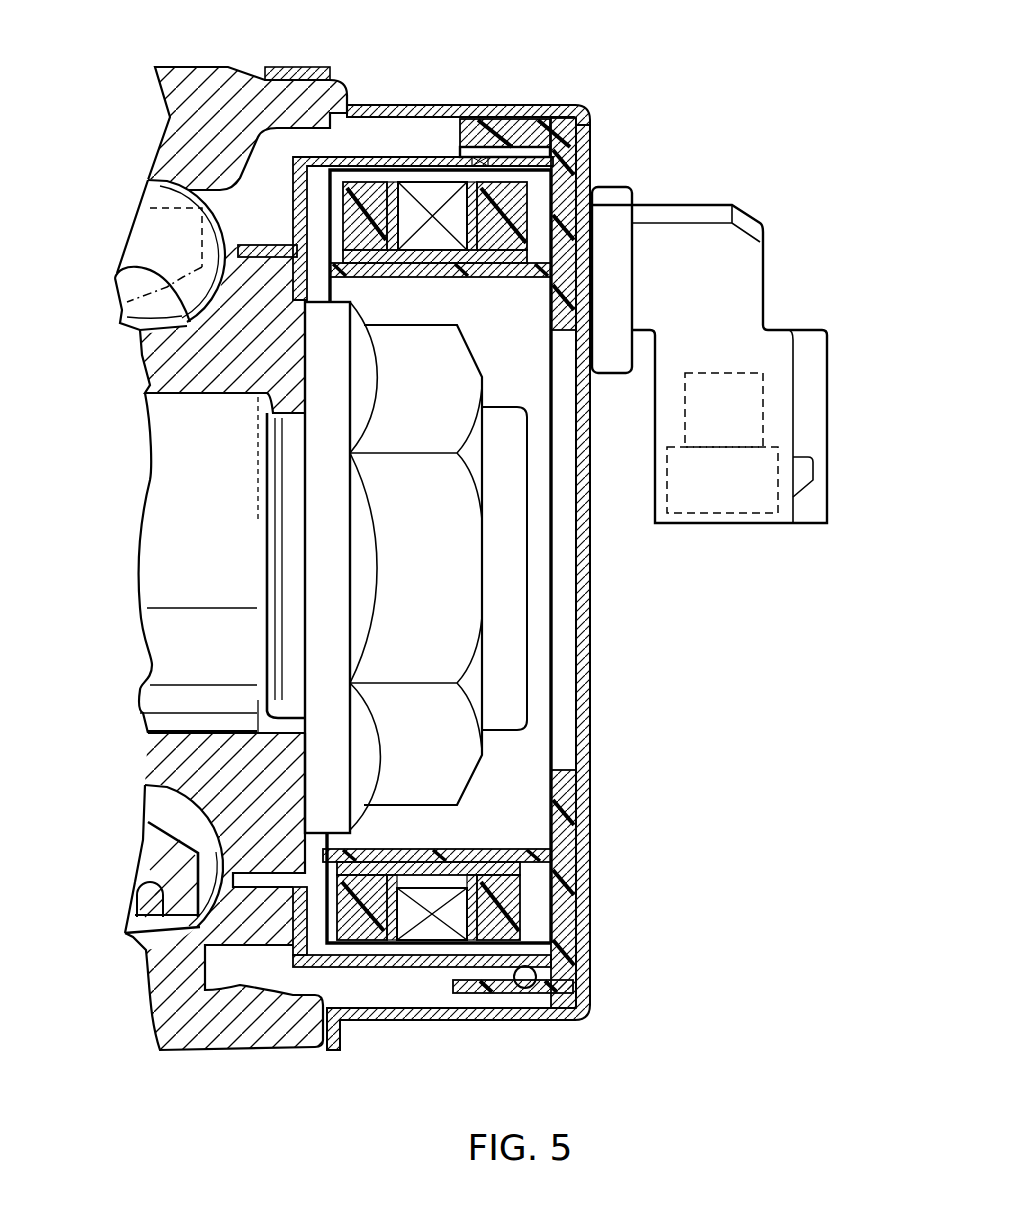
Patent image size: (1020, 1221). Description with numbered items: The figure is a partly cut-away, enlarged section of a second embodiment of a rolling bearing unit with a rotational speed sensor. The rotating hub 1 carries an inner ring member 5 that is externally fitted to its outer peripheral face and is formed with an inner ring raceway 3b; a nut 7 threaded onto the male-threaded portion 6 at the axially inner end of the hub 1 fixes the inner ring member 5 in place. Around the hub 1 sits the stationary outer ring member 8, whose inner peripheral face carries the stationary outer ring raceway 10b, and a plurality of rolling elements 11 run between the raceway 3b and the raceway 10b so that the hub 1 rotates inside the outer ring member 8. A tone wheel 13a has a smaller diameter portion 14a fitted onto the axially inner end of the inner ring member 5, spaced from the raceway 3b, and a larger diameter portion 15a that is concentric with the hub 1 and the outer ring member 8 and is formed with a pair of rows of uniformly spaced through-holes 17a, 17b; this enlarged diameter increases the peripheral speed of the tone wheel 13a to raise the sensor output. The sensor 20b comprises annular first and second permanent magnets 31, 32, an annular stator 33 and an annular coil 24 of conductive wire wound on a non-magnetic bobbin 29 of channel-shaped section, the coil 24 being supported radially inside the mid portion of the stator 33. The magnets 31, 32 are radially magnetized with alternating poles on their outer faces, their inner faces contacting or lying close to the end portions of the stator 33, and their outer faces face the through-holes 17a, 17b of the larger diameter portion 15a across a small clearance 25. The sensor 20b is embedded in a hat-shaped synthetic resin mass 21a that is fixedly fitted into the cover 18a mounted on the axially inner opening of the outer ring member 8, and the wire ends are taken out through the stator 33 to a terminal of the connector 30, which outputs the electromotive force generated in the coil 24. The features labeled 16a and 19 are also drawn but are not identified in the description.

The hub 1 is at (160, 420).
The inner ring raceway 3b is at (122, 276).
The inner ring member 5 is at (277, 283).
The male-threaded portion 6 is at (305, 633).
The nut 7 is at (457, 540).
The stationary outer ring member 8 is at (190, 80).
The stationary outer ring raceway 10b is at (140, 884).
The rolling elements 11 is at (160, 225).
The tone wheel 13a is at (445, 195).
The smaller diameter portion 14a is at (238, 963).
The larger diameter portion 15a is at (420, 950).
The bracket leg 16a is at (280, 933).
The through-holes 17a is at (358, 157).
The through-holes 17b is at (567, 133).
The cover 18a is at (590, 700).
The housing top wall 19 is at (405, 100).
The sensor 20b is at (525, 140).
The synthetic resin mass 21a is at (593, 180).
The coil 24 is at (440, 190).
The small clearance 25 is at (503, 962).
The bobbin 29 is at (549, 887).
The connector 30 is at (755, 270).
The first permanent magnet 31 is at (360, 927).
The second permanent magnet 32 is at (513, 923).
The stator 33 is at (477, 860).